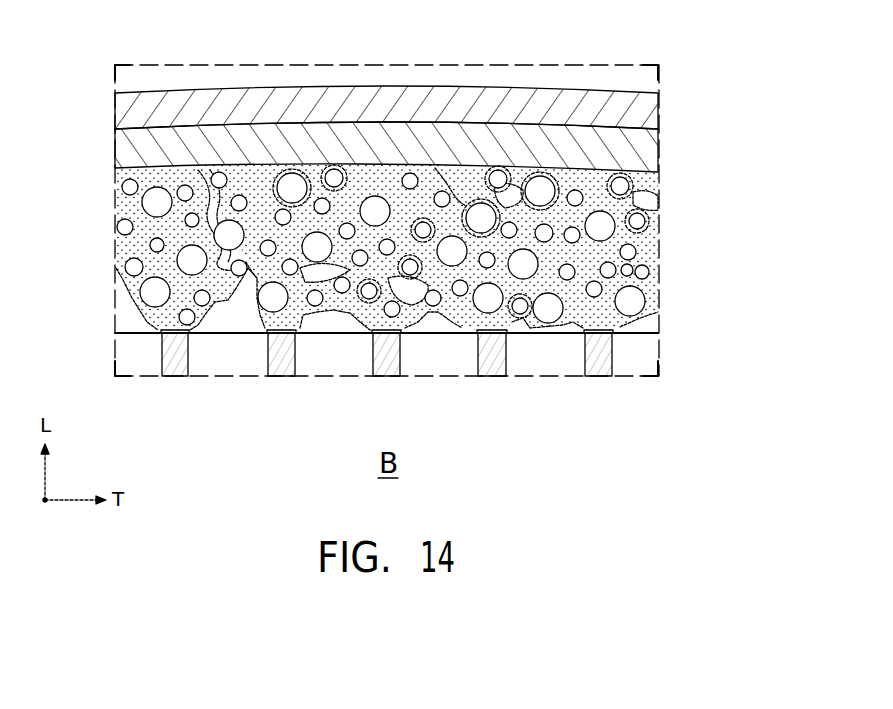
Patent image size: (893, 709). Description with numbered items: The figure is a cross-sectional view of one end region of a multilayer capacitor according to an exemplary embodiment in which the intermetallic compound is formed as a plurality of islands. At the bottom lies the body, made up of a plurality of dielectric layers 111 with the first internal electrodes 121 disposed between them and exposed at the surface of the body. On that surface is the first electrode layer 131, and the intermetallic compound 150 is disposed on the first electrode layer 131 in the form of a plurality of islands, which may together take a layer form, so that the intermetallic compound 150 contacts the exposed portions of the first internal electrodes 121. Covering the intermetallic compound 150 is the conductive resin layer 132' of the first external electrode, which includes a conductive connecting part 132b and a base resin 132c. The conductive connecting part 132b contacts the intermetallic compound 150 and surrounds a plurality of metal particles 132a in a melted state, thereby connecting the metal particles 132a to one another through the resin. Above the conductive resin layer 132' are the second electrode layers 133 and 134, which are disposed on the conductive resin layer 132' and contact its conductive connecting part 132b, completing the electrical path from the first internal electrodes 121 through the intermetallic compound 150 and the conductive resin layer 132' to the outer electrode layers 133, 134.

The dielectric layer 111 is at (545, 358).
The first internal electrode 121 is at (602, 368).
The first electrode layer 131 is at (440, 313).
The conductive resin layer 132' is at (794, 227).
The metal particle 132a is at (655, 227).
The conductive connecting part 132b is at (655, 260).
The base resin 132c is at (655, 197).
The second electrode layer 133 is at (655, 160).
The second electrode layer 134 is at (655, 123).
The intermetallic compound 150 is at (172, 333).